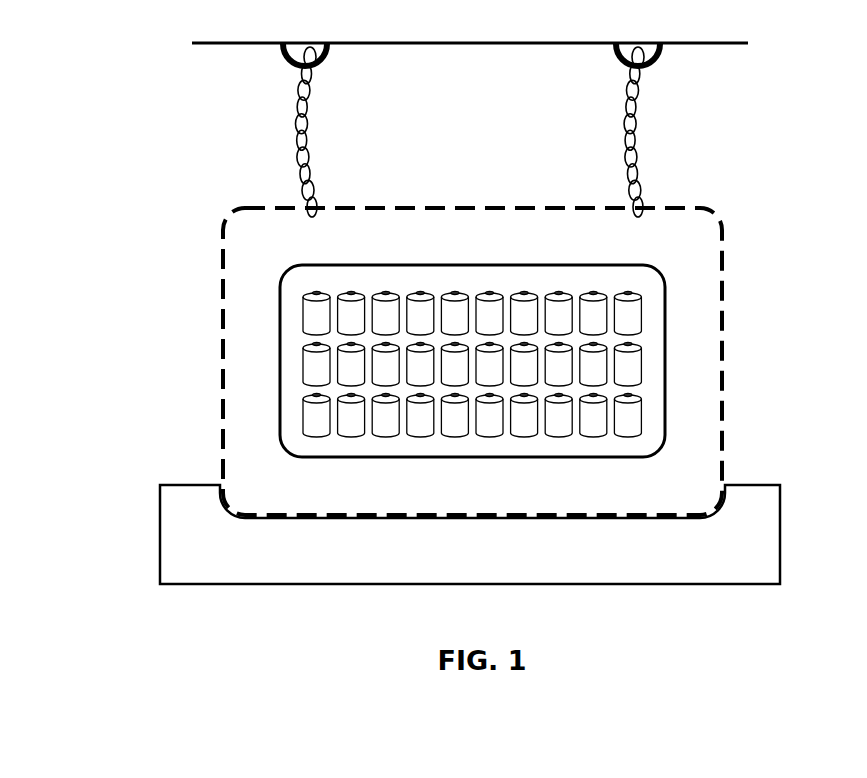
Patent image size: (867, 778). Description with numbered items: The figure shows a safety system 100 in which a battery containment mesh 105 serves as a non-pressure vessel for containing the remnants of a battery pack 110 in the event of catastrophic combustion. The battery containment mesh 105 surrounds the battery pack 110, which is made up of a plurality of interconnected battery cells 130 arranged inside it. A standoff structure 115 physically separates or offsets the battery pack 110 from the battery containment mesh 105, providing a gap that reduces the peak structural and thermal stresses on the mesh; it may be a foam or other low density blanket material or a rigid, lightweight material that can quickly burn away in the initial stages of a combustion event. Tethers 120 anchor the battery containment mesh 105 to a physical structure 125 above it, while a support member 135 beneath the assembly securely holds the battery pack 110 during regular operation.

The safety system 100 is at (112, 71).
The battery containment mesh 105 is at (224, 447).
The battery pack 110 is at (480, 358).
The standoff structure 115 is at (695, 495).
The tethers 120 is at (688, 126).
The physical structure 125 is at (423, 45).
The battery cells 130 is at (310, 317).
The support member 135 is at (561, 563).